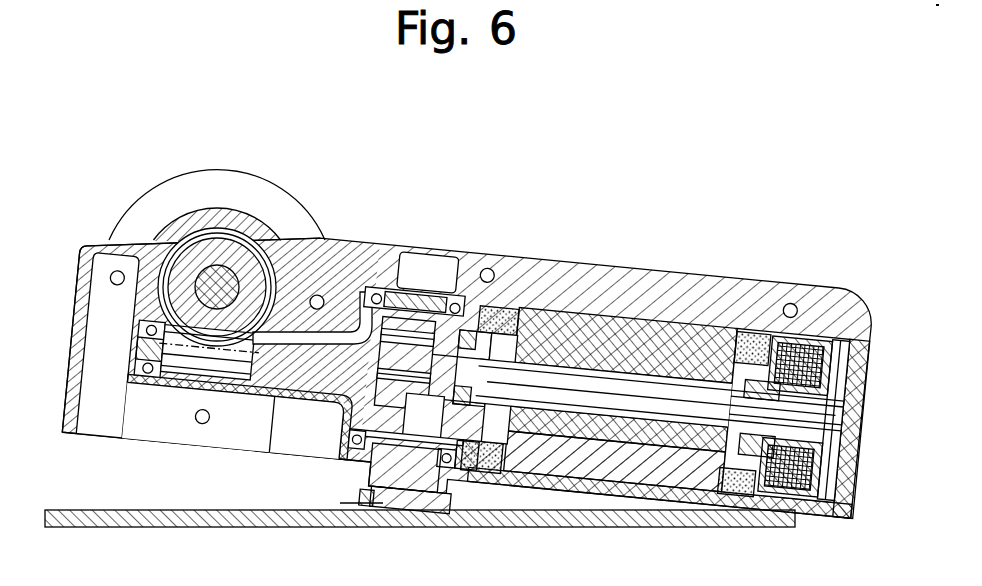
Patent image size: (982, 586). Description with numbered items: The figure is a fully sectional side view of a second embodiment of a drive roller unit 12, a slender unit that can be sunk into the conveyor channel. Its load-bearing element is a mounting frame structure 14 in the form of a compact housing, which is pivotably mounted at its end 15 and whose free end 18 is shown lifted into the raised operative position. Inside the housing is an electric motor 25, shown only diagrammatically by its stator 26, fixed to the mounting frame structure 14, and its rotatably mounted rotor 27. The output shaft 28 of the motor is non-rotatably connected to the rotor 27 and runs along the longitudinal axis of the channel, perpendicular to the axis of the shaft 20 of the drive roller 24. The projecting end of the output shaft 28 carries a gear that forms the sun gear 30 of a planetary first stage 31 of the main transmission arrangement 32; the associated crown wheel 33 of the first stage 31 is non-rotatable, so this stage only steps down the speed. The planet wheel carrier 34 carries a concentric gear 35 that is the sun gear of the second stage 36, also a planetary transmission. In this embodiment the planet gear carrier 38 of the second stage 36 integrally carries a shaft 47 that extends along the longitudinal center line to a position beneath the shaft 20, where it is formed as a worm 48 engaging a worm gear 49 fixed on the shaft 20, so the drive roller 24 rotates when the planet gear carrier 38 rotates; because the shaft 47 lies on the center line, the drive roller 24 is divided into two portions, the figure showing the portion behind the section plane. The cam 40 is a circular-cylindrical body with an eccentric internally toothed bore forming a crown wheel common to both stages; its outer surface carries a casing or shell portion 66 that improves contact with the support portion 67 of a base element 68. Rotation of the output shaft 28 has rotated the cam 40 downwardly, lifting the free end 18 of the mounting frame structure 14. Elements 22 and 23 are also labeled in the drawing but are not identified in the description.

The drive roller unit 12 is at (662, 266).
The mounting frame structure 14 is at (586, 288).
The end of mounting frame structure 15 is at (822, 512).
The free end of mounting frame structure 18 is at (102, 418).
The shaft of drive roller 20 is at (255, 262).
The bearing 22 is at (228, 244).
The disc 23 is at (173, 196).
The drive roller 24 is at (139, 193).
The electric motor 25 is at (726, 500).
The stator 26 is at (597, 468).
The rotor 27 is at (671, 448).
The output shaft 28 is at (706, 398).
The sun gear 30 is at (482, 300).
The first stage 31 is at (450, 298).
The main transmission arrangement 32 is at (495, 154).
The crown wheel 33 is at (383, 520).
The planet wheel carrier 34 is at (474, 512).
The gear 35 is at (337, 413).
The second stage 36 is at (401, 292).
The planet gear carrier 38 is at (343, 466).
The cam 40 is at (365, 482).
The shaft 47 is at (263, 456).
The worm 48 is at (178, 360).
The worm gear 49 is at (221, 378).
The casing or shell portion 66 is at (387, 488).
The support portion 67 is at (441, 508).
The base element 68 is at (170, 528).